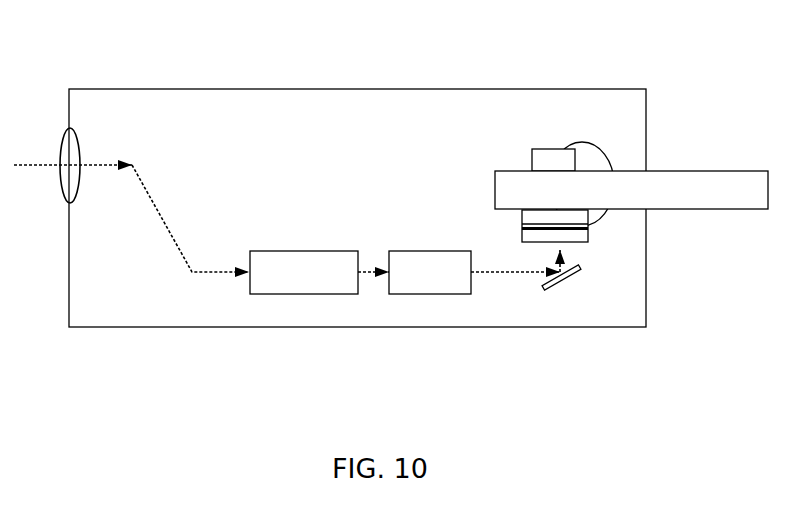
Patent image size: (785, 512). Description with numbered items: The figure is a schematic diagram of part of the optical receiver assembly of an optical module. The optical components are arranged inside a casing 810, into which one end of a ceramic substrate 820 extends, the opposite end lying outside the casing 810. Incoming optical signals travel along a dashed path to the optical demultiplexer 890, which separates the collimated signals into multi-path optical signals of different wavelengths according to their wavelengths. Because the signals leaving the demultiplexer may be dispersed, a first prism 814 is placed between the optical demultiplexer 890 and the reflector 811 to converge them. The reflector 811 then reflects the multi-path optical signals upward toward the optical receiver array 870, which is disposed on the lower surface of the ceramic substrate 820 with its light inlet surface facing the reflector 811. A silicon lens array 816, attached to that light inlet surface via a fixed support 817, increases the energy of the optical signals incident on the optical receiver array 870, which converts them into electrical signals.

The casing 810 is at (608, 122).
The ceramic substrate 820 is at (683, 199).
The optical receiver array 870 is at (576, 212).
The silicon lens array 816 is at (565, 233).
The fixed support 817 is at (521, 222).
The reflector 811 is at (543, 290).
The first prism 814 is at (422, 272).
The optical demultiplexer 890 is at (303, 278).